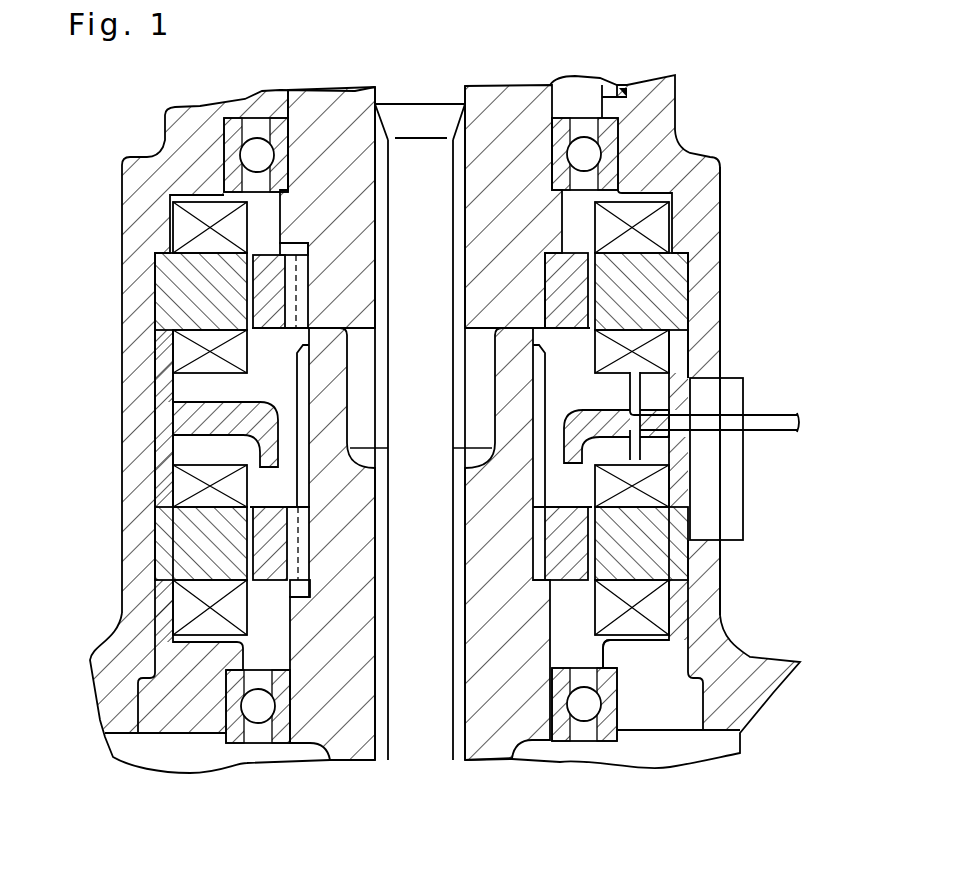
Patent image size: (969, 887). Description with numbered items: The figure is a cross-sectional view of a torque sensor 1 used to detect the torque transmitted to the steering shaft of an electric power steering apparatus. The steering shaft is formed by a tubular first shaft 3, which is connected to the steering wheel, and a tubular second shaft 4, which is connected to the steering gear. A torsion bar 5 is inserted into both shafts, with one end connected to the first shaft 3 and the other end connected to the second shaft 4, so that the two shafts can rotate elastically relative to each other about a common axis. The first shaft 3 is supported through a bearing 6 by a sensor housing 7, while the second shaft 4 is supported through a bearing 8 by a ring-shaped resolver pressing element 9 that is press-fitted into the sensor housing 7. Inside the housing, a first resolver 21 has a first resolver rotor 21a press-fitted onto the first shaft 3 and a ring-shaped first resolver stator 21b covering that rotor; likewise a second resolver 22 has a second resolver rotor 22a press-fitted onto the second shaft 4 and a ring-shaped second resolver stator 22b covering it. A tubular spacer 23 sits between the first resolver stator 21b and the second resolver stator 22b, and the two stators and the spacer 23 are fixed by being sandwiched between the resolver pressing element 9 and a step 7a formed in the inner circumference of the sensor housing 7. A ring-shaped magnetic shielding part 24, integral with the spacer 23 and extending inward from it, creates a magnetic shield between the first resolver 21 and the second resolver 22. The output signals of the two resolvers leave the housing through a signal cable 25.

The torque sensor 1 is at (677, 231).
The first shaft 3 is at (500, 127).
The second shaft 4 is at (493, 737).
The torsion bar 5 is at (420, 723).
The bearing 6 is at (587, 155).
The sensor housing 7 is at (697, 183).
The step 7a is at (692, 268).
The bearing 8 is at (585, 712).
The resolver pressing element 9 is at (670, 660).
The first resolver 21 is at (175, 290).
The first resolver rotor 21a is at (570, 290).
The first resolver stator 21b is at (683, 302).
The second resolver 22 is at (173, 547).
The second resolver rotor 22a is at (568, 547).
The second resolver stator 22b is at (673, 527).
The spacer 23 is at (160, 464).
The magnetic shielding part 24 is at (237, 427).
The signal cable 25 is at (768, 418).